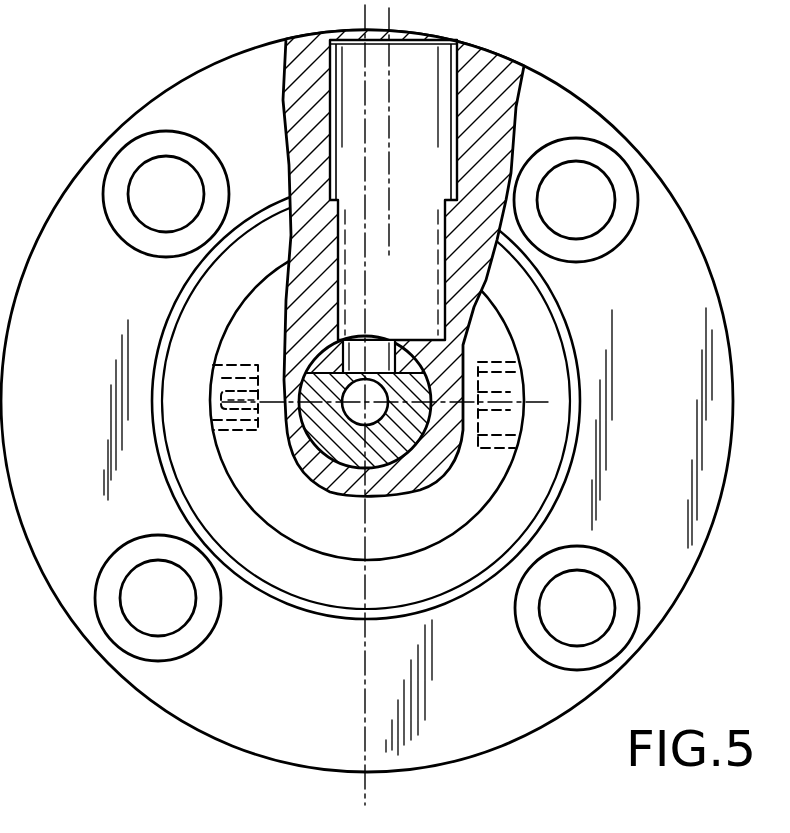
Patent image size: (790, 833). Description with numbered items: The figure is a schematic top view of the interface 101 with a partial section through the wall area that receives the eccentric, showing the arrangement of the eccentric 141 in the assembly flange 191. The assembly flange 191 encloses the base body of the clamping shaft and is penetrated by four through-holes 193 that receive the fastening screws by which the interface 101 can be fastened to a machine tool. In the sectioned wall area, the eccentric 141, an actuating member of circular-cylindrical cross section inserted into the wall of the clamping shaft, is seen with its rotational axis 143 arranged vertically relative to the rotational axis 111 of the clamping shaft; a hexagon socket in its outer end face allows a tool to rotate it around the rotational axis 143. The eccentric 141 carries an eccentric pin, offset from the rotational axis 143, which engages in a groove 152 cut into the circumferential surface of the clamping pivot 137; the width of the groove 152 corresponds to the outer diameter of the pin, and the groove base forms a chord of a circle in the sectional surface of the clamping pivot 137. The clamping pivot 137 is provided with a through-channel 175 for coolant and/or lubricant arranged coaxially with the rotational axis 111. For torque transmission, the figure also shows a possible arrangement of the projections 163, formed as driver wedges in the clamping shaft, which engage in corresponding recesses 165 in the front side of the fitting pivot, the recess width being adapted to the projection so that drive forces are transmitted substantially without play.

The interface 101 is at (165, 73).
The rotational axis of the clamping shaft 111 is at (366, 380).
The clamping pivot 137 is at (333, 448).
The eccentric 141 is at (433, 62).
The rotational axis of the eccentric 143 is at (392, 21).
The groove 152 is at (410, 368).
The projection 163 is at (216, 383).
The recess 165 is at (247, 437).
The through-channel 175 is at (376, 420).
The assembly flange 191 is at (570, 116).
The through-holes 193 is at (605, 219).